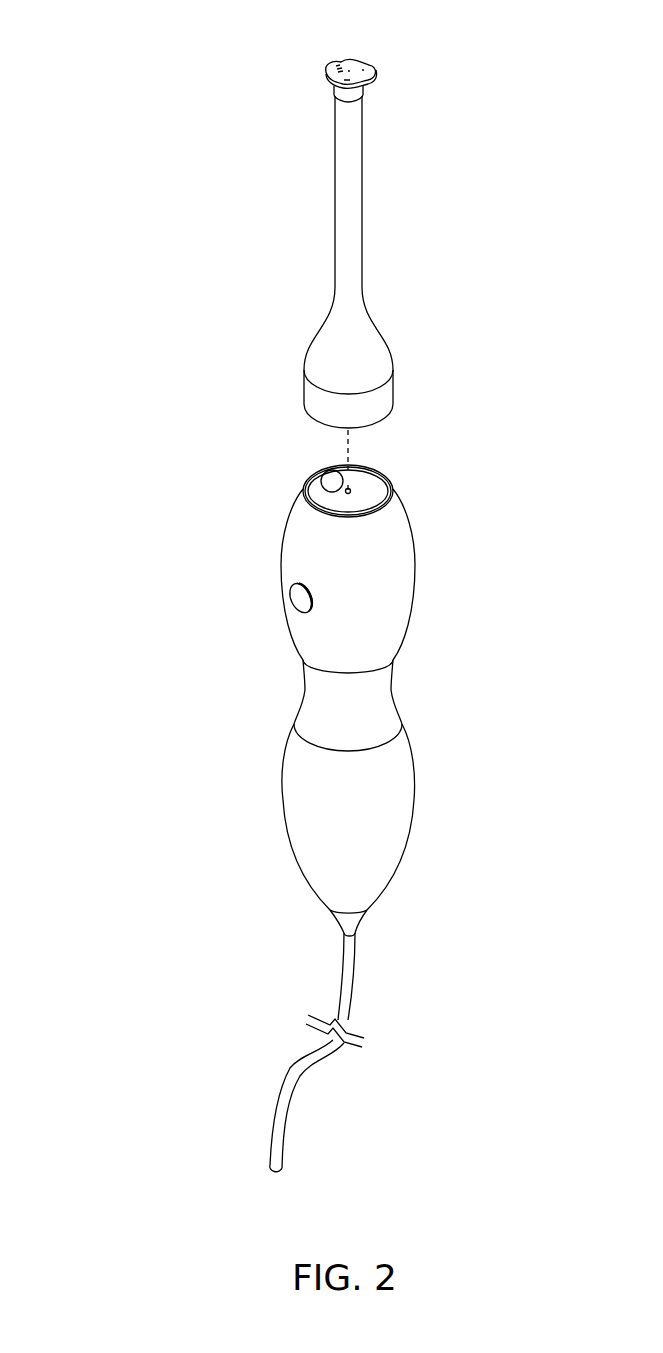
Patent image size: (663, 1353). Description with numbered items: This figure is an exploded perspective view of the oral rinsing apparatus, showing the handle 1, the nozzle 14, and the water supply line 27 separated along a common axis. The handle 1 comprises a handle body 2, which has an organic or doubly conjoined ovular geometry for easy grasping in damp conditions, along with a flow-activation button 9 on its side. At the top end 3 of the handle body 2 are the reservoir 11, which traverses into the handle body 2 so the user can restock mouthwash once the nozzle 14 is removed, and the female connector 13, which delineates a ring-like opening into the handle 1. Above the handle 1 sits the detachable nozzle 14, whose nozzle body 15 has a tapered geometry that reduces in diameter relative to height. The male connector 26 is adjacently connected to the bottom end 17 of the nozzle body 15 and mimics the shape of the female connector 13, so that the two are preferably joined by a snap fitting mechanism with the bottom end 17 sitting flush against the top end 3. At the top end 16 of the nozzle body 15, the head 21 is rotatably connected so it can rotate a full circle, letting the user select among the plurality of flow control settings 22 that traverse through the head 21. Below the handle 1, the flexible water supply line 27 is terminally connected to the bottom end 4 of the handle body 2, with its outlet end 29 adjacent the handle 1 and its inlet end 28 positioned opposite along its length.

The handle 1 is at (141, 710).
The handle body 2 is at (405, 565).
The top end 3 is at (286, 493).
The bottom end 4 is at (300, 896).
The flow-activation button 9 is at (293, 598).
The reservoir 11 is at (331, 470).
The female connector 13 is at (391, 480).
The nozzle 14 is at (144, 221).
The nozzle body 15 is at (357, 235).
The top end 16 is at (328, 95).
The bottom end 17 is at (397, 350).
The head 21 is at (378, 72).
The plurality of flow control settings 22 is at (338, 57).
The male connector 26 is at (310, 398).
The water supply line 27 is at (288, 1070).
The inlet end 28 is at (258, 1160).
The outlet end 29 is at (366, 935).